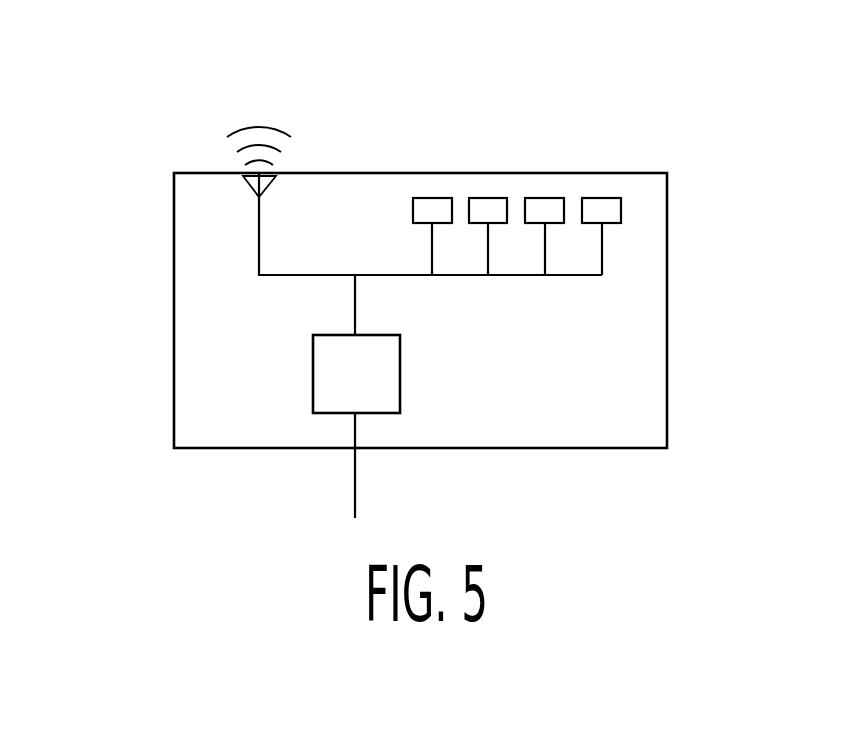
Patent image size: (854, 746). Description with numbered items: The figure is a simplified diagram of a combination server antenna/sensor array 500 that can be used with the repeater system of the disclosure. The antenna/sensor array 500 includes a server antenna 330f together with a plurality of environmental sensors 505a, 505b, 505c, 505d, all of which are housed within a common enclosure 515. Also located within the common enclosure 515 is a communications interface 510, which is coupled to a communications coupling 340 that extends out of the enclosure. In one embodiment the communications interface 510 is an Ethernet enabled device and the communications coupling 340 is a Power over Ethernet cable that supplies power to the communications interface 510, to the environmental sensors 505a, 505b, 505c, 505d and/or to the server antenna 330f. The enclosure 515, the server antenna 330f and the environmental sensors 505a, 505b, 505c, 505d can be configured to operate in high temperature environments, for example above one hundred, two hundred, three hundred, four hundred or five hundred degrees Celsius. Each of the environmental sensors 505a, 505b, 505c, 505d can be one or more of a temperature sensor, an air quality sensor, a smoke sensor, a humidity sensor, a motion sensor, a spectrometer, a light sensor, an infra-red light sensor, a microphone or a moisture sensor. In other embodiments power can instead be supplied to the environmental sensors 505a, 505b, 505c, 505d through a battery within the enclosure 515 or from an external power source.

The combination server antenna/sensor array 500 is at (150, 88).
The server antenna 330f is at (246, 184).
The environmental sensor 505a is at (418, 198).
The environmental sensor 505b is at (492, 198).
The environmental sensor 505c is at (552, 198).
The environmental sensor 505d is at (605, 198).
The communications interface 510 is at (403, 367).
The common enclosure 515 is at (667, 305).
The communications coupling 340 is at (357, 493).